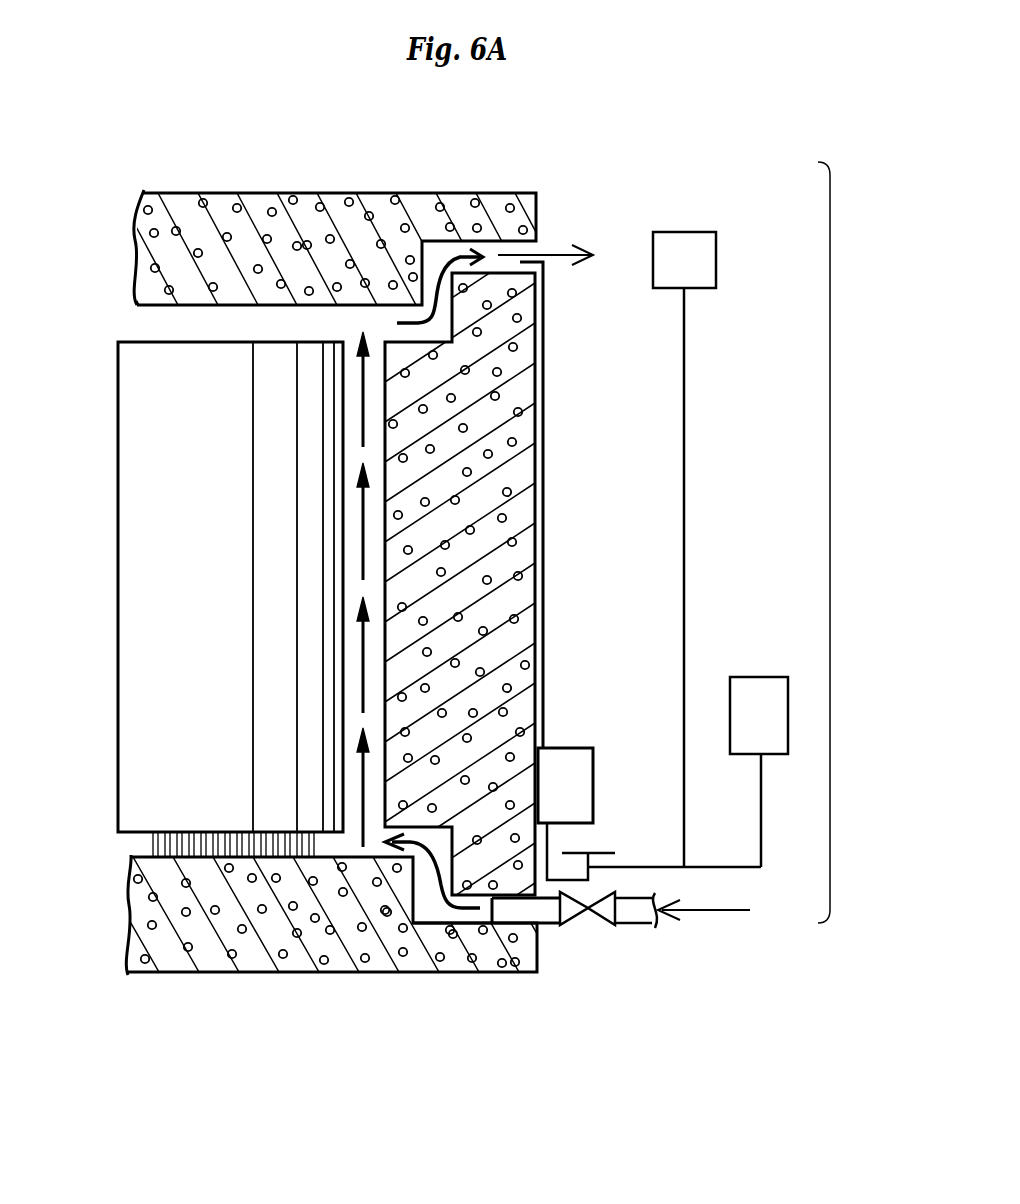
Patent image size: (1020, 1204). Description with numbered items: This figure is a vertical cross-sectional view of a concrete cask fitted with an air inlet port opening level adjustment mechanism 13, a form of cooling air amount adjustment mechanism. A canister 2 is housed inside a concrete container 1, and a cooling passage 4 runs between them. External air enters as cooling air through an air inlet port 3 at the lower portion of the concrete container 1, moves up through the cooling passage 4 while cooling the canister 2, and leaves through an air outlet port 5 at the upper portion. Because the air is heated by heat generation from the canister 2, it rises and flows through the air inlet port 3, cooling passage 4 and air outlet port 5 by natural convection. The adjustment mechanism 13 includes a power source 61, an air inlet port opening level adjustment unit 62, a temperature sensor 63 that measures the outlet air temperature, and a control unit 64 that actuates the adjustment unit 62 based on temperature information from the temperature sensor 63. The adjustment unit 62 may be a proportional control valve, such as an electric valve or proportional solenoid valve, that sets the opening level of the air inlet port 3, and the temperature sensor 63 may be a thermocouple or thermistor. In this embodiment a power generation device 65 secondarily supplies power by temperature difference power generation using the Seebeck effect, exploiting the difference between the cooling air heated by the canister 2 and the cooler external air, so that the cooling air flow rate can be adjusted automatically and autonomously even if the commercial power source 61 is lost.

The concrete container 1 is at (283, 210).
The canister 2 is at (125, 492).
The air inlet port 3 is at (490, 900).
The cooling passage 4 is at (353, 843).
The air outlet port 5 is at (490, 252).
The air inlet port opening level adjustment mechanism 13 is at (830, 493).
The power source 61 is at (752, 695).
The air inlet port opening level adjustment unit 62 is at (606, 852).
The temperature sensor 63 is at (545, 340).
The control unit 64 is at (571, 752).
The power generation device 65 is at (716, 243).